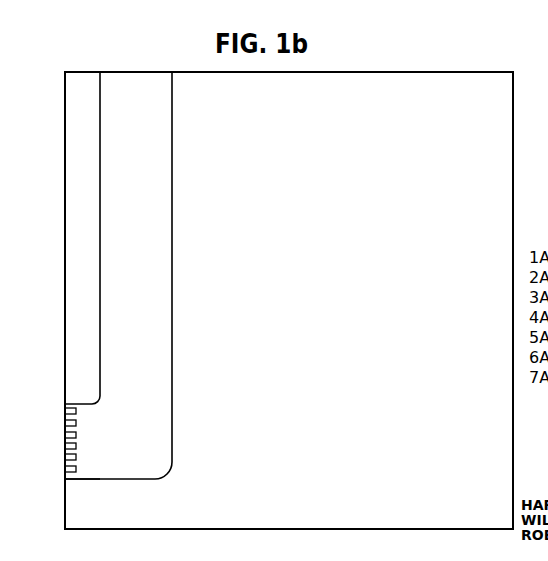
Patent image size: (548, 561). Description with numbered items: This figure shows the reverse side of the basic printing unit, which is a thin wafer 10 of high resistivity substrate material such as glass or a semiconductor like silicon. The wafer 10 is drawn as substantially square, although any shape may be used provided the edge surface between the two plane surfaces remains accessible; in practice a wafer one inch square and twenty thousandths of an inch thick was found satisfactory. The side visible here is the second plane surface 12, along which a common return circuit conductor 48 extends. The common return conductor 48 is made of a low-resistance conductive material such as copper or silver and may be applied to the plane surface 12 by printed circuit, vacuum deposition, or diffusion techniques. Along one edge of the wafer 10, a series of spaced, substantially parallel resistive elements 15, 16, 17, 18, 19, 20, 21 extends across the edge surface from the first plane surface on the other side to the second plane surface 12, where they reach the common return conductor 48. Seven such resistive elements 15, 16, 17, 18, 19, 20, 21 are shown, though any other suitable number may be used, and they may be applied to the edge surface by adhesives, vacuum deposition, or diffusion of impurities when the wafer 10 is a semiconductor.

The thin wafer 10 is at (515, 120).
The second plane surface 12 is at (405, 97).
The common return circuit conductor 48 is at (133, 87).
The resistive element 15 is at (65, 409).
The resistive element 16 is at (65, 421).
The resistive element 17 is at (65, 433).
The resistive element 18 is at (65, 444).
The resistive element 19 is at (65, 455).
The resistive element 20 is at (65, 467).
The resistive element 21 is at (65, 479).